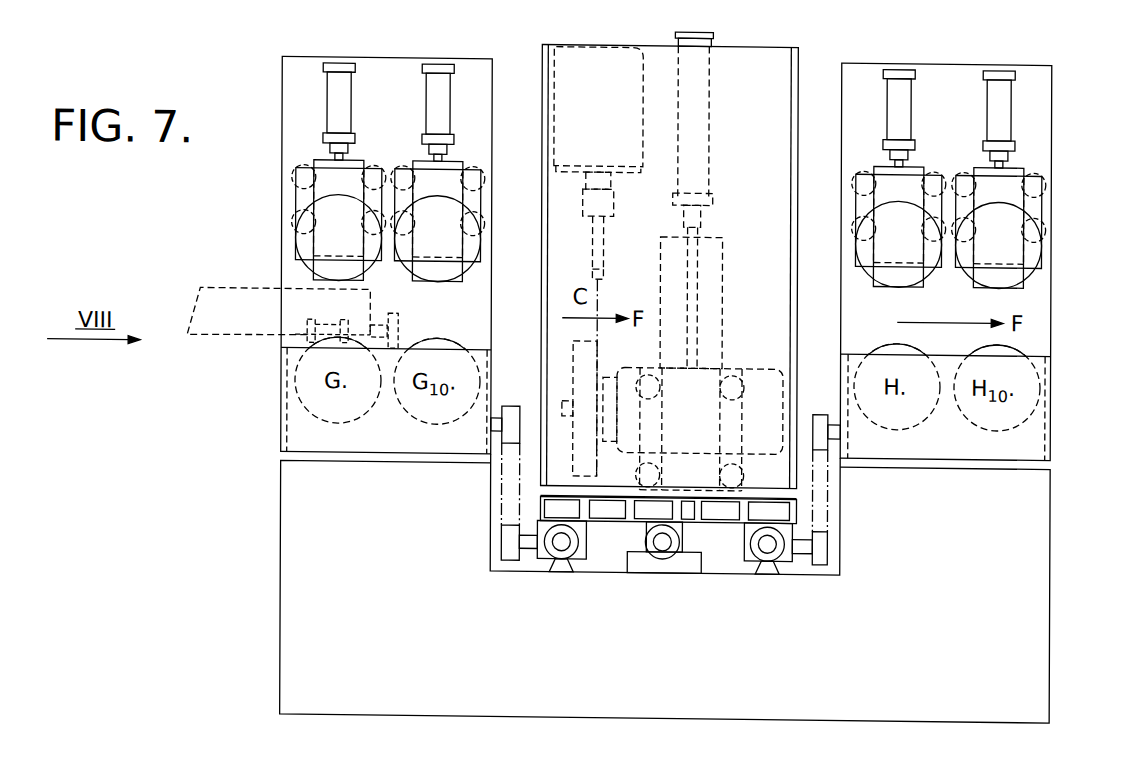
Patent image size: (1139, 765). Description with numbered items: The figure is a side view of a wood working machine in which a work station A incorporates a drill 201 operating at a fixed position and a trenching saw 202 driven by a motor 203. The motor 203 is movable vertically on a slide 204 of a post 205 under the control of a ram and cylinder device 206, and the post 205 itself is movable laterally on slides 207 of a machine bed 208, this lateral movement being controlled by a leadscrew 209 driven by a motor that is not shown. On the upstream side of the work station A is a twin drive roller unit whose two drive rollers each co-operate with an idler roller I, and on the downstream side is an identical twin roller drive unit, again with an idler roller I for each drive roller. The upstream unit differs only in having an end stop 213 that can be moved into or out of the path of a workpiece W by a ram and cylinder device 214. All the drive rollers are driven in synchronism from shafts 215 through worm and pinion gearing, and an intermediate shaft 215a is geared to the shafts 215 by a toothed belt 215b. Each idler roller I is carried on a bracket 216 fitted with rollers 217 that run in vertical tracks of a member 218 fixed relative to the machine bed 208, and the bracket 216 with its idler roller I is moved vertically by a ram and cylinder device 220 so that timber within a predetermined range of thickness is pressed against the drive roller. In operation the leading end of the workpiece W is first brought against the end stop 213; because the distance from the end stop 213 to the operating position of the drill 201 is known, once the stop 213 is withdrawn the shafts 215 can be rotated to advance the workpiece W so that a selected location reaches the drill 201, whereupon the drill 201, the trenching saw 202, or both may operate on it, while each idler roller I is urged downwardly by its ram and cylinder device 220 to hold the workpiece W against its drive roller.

The drill 201 is at (598, 163).
The trenching saw 202 is at (573, 471).
The motor 203 is at (770, 444).
The slide 204 is at (720, 293).
The post 205 is at (705, 240).
The ram and cylinder device 206 is at (695, 114).
The slides 207 is at (558, 545).
The machine bed 208 is at (665, 591).
The leadscrew 209 is at (665, 545).
The end stop 213 is at (402, 330).
The ram and cylinder device 214 is at (292, 345).
The shafts 215 is at (497, 420).
The intermediate shaft 215a is at (528, 548).
The toothed belt 215b is at (503, 472).
The bracket 216 is at (447, 175).
The rollers 217 is at (292, 183).
The member 218 is at (320, 164).
The ram and cylinder devices 220 is at (432, 125).
The work station A is at (778, 43).
The workpiece W is at (243, 332).
The idler roller I is at (298, 247).